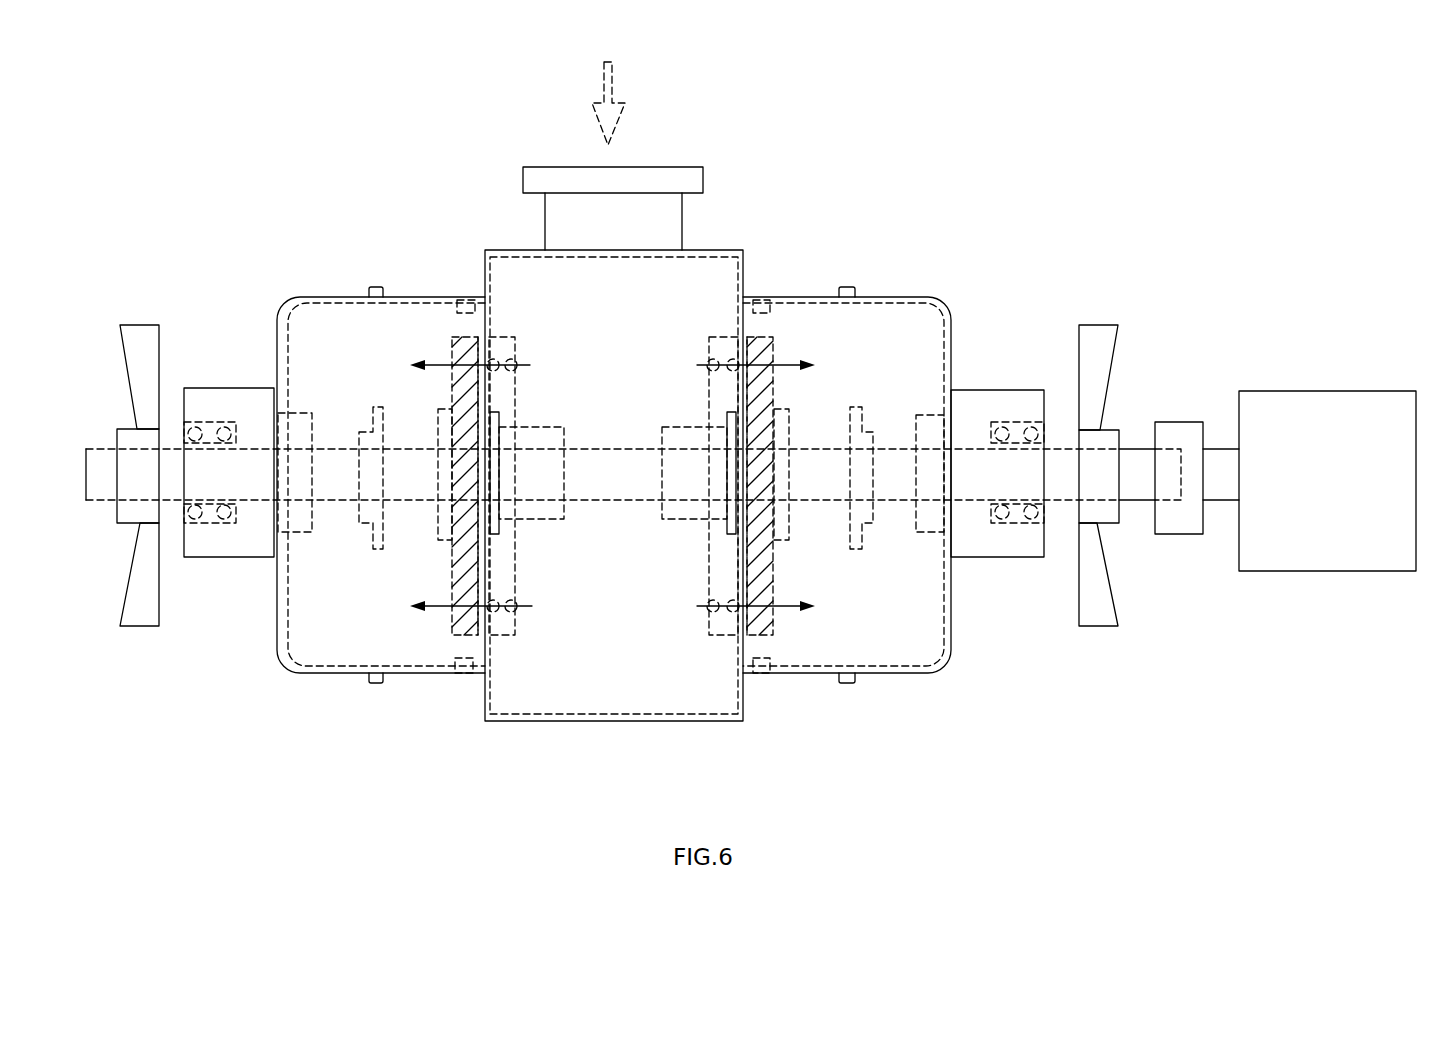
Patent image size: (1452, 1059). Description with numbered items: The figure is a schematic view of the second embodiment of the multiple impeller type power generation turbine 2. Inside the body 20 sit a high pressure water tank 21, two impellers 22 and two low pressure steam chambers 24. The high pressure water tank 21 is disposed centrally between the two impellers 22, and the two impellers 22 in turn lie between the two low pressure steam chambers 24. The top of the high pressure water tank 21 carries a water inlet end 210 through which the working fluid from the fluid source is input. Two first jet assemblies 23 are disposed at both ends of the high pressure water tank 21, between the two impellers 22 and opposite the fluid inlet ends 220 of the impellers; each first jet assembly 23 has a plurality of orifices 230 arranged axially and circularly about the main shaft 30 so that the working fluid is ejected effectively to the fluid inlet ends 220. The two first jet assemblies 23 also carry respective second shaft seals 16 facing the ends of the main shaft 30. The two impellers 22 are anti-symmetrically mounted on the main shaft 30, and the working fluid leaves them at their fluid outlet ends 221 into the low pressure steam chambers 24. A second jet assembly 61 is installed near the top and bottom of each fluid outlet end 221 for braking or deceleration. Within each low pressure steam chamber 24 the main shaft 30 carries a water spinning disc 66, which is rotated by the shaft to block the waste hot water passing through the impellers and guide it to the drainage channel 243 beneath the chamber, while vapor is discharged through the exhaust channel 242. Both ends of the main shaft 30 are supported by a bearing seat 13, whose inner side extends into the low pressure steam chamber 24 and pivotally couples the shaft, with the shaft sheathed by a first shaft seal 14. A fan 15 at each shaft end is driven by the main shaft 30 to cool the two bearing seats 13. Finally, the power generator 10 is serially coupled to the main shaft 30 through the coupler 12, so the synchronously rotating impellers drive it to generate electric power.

The multiple impeller type power generation turbine 2 is at (1015, 305).
The power generator 10 is at (1332, 403).
The coupler 12 is at (1187, 428).
The bearing seat 13 is at (205, 427).
The first shaft seal 14 is at (295, 413).
The fan 15 is at (140, 337).
The second shaft seal 16 is at (550, 520).
The body 20 is at (950, 362).
The high pressure water tank 21 is at (707, 275).
The water inlet end 210 is at (672, 177).
The impeller 22 is at (452, 345).
The fluid inlet end 220 is at (478, 391).
The fluid outlet end 221 is at (452, 345).
The first jet assembly 23 is at (728, 347).
The orifice 230 is at (513, 360).
The low pressure steam chamber 24 is at (295, 613).
The exhaust channel 242 is at (375, 287).
The drainage channel 243 is at (375, 682).
The main shaft 30 is at (1135, 467).
The second jet assembly 61 is at (467, 302).
The water spinning disc 66 is at (378, 407).